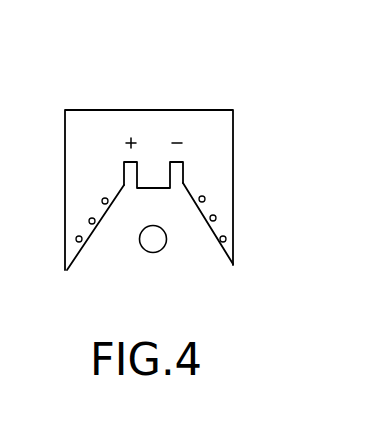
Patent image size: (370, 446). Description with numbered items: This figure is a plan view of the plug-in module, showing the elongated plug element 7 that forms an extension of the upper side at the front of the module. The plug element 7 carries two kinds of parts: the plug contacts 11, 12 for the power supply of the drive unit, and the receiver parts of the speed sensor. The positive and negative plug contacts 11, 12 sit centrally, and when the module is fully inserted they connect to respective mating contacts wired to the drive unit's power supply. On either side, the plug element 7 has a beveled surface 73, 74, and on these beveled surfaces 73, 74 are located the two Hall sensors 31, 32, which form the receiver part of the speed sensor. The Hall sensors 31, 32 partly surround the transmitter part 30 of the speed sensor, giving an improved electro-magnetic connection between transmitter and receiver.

The plug element 7 is at (218, 136).
The positive plug contact 11 is at (123, 162).
The negative plug contact 12 is at (182, 162).
The transmitter part 30 is at (153, 245).
The Hall sensor 31 is at (79, 249).
The Hall sensor 32 is at (217, 240).
The beveled surface 73 is at (87, 190).
The beveled surface 74 is at (223, 207).